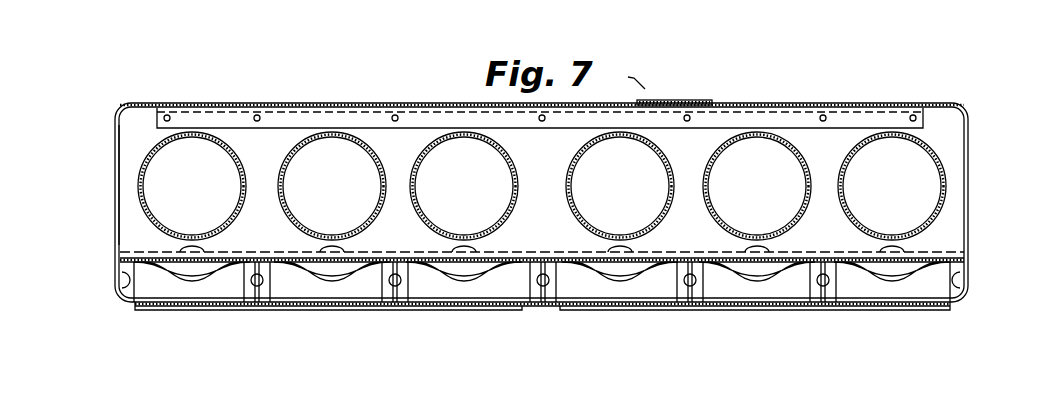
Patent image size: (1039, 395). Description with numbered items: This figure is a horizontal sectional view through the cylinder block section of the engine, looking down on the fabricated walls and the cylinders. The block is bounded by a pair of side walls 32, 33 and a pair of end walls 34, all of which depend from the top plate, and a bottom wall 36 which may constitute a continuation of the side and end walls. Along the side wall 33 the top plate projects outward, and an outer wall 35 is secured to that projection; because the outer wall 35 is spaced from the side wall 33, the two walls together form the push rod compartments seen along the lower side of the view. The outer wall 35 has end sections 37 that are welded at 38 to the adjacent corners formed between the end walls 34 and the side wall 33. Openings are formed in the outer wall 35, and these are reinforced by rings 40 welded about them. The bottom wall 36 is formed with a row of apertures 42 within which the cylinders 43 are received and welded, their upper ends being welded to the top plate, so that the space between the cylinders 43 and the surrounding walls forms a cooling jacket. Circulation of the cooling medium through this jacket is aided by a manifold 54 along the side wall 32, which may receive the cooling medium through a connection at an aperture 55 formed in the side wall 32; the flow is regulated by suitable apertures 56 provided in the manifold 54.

The side wall 32 is at (453, 104).
The side wall 33 is at (515, 262).
The end walls 34 is at (115, 196).
The outer wall 35 is at (632, 311).
The bottom wall 36 is at (130, 142).
The end sections 37 is at (115, 278).
The weld 38 is at (116, 257).
The rings 40 is at (342, 311).
The apertures 42 is at (340, 160).
The cylinders 43 is at (308, 138).
The manifold 54 is at (764, 116).
The aperture 55 is at (666, 103).
The apertures 56 is at (824, 116).